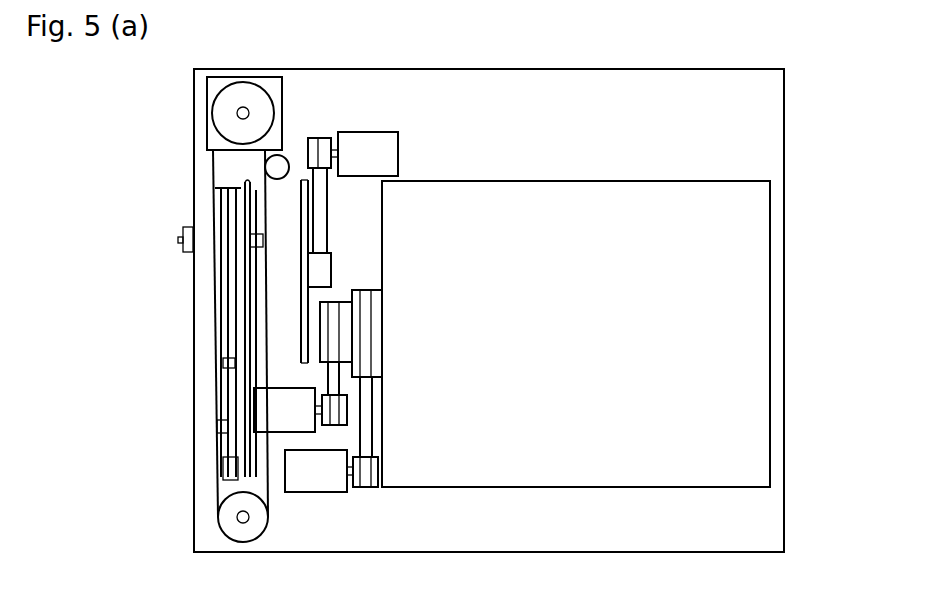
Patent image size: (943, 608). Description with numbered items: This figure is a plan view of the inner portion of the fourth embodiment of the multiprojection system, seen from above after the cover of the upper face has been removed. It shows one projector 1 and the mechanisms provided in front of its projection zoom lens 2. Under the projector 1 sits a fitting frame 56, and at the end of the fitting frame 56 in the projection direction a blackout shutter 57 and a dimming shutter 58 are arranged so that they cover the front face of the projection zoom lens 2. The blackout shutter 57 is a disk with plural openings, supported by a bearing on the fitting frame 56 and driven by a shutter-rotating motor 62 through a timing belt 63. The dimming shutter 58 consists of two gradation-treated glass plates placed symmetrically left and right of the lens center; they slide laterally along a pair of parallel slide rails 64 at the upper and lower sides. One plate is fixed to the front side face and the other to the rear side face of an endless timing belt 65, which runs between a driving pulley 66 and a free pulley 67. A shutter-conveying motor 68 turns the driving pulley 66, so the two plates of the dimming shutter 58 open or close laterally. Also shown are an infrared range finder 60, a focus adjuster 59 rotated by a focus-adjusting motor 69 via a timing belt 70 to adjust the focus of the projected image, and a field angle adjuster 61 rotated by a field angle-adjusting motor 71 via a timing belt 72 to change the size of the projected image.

The projector 1 is at (738, 304).
The projection zoom lens 2 is at (318, 347).
The fitting frame 56 is at (760, 533).
The blackout shutter 57 is at (300, 326).
The dimming shutter 58 is at (250, 278).
The focus adjuster 59 is at (345, 314).
The infrared range finder 60 is at (182, 239).
The field angle adjuster 61 is at (378, 364).
The shutter-rotating motor 62 is at (383, 150).
The timing belt 63 is at (320, 199).
The slide rails 64 is at (222, 194).
The timing belt 65 is at (213, 320).
The driving pulley 66 is at (235, 100).
The free pulley 67 is at (238, 528).
The shutter-conveying motor 68 is at (273, 88).
The focus-adjusting motor 69 is at (288, 418).
The timing belt 70 is at (335, 385).
The field angle-adjusting motor 71 is at (315, 473).
The timing belt 72 is at (367, 427).